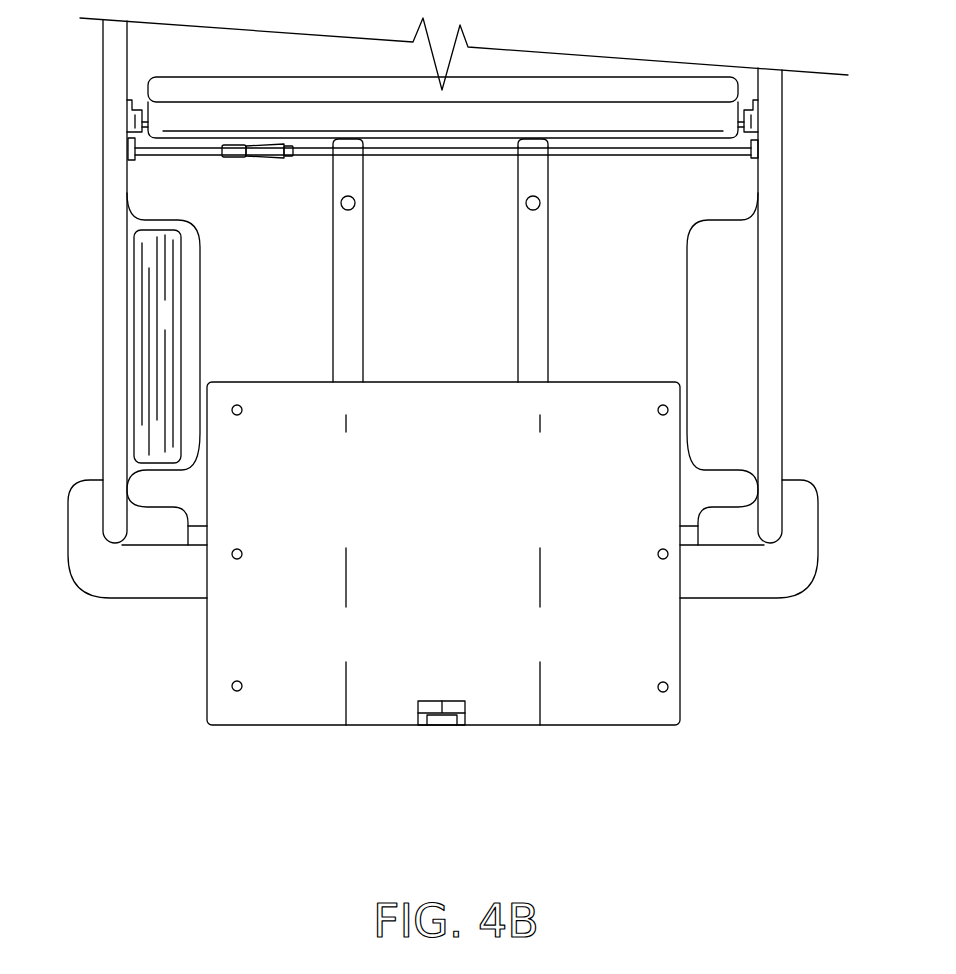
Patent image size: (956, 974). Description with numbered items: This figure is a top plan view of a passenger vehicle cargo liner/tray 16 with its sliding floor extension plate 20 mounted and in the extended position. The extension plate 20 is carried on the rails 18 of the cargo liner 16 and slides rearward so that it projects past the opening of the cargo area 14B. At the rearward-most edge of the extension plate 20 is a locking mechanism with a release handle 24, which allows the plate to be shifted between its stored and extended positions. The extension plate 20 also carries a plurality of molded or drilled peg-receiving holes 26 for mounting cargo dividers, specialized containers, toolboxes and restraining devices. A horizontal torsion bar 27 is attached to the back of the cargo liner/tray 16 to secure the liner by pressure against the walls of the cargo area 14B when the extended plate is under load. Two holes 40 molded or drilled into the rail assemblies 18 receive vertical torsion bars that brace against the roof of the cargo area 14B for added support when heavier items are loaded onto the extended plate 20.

The cargo area 14B is at (113, 543).
The cargo liner/tray 16 is at (283, 225).
The rails 18 is at (533, 325).
The sliding floor extension plate 20 is at (580, 637).
The release handle 24 is at (443, 720).
The peg-receiving holes 26 is at (667, 557).
The horizontal torsion bar 27 is at (717, 165).
The holes 40 is at (354, 208).